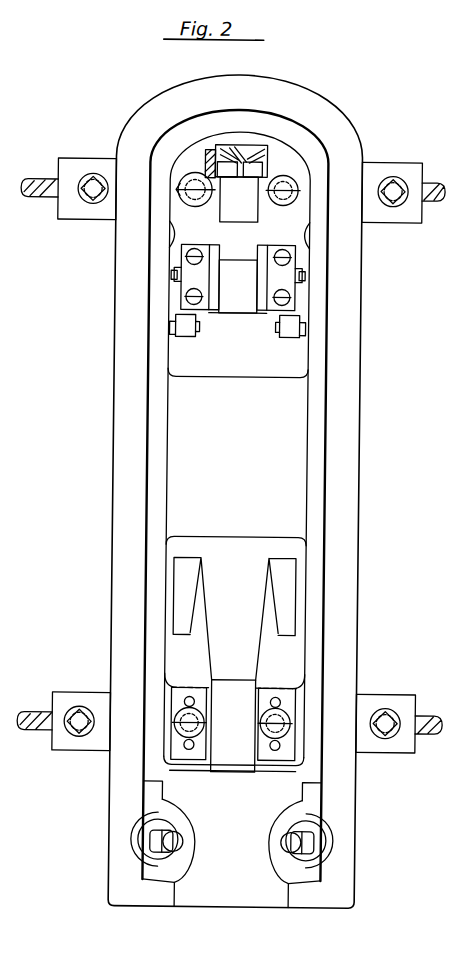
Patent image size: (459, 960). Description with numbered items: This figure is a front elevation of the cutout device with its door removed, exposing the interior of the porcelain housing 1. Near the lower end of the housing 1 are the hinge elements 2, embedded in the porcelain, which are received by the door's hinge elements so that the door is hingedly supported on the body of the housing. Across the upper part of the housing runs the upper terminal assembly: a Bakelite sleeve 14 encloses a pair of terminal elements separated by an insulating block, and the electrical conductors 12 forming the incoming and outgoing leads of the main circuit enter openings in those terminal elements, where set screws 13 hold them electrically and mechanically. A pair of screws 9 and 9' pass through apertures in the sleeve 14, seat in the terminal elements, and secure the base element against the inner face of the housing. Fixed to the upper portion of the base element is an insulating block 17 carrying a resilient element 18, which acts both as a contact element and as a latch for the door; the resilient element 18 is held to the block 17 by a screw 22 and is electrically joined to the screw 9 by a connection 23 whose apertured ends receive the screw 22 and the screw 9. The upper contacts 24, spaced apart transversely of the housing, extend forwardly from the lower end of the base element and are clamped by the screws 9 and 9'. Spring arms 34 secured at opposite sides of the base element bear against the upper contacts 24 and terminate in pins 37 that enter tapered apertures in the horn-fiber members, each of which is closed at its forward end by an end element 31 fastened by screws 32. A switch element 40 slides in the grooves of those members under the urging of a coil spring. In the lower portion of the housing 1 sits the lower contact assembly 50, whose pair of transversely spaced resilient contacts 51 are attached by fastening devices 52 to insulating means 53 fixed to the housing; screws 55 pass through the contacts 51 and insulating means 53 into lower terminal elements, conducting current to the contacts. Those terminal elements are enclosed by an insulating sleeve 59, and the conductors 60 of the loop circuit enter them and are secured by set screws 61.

The housing 1 is at (352, 494).
The hinge elements 2 is at (183, 847).
The screw 9 is at (181, 166).
The screw 9' is at (307, 188).
The electrical conductors 12 is at (46, 186).
The set screws 13 is at (89, 176).
The sleeve 14 is at (405, 168).
The block 17 is at (258, 215).
The resilient element 18 is at (266, 150).
The screw 22 is at (246, 150).
The connection 23 is at (212, 160).
The upper contacts 24 is at (186, 338).
The end element 31 is at (270, 288).
The screws 32 is at (189, 257).
The spring arms 34 is at (174, 282).
The pins 37 is at (178, 270).
The switch element 40 is at (238, 265).
The lower contact assembly 50 is at (215, 778).
The resilient contacts 51 is at (268, 627).
The fastening devices 52 is at (276, 742).
The insulating means 53 is at (273, 772).
The screws 55 is at (180, 725).
The insulating sleeve 59 is at (403, 695).
The conductors 60 is at (45, 714).
The set screws 61 is at (79, 735).